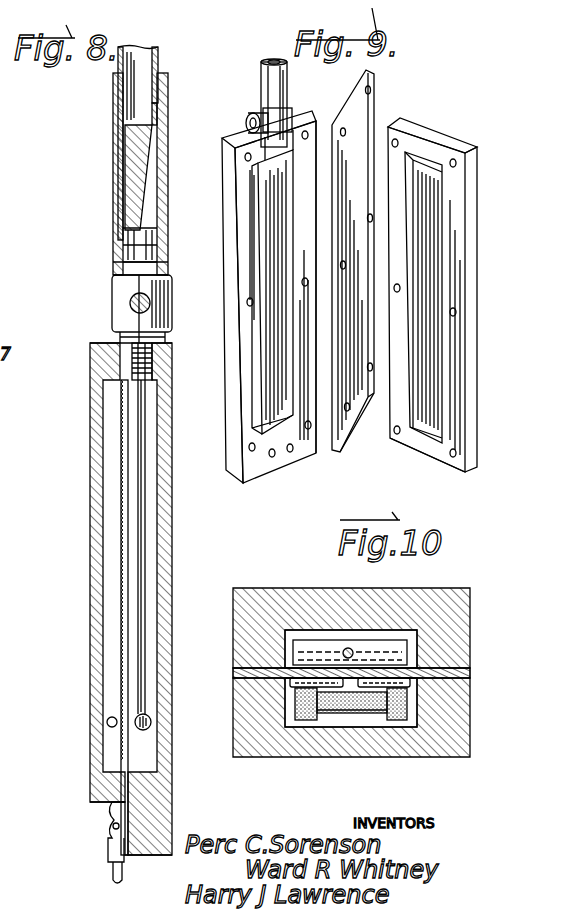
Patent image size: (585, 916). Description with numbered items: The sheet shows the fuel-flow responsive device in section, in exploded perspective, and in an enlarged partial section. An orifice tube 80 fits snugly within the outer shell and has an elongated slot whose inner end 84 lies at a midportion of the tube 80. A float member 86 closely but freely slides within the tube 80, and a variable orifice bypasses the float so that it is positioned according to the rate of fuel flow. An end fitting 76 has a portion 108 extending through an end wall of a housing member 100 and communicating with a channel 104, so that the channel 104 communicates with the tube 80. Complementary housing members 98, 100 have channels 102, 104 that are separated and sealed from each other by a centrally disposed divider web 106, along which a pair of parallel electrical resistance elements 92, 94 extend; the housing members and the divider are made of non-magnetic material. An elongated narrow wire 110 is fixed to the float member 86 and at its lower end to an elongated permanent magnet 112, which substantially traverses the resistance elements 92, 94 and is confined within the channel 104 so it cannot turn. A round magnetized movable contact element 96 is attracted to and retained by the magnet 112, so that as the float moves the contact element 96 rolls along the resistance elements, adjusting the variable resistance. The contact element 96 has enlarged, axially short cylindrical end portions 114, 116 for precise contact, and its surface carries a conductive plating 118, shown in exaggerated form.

In FIG. 8, the end fitting 76 is at (172, 303).
In FIG. 8, the orifice tube 80 is at (160, 61).
In FIG. 8, the inner end of slot 84 is at (90, 298).
In FIG. 8, the float member 86 is at (152, 139).
In FIG. 10, the electrical resistance element 92 is at (287, 703).
In FIG. 10, the electrical resistance element 94 is at (417, 668).
In FIG. 8, the movable contact element 96 is at (226, 0).
In FIG. 9, the movable contact element 96 is at (269, 103).
In FIG. 10, the movable contact element 96 is at (340, 715).
In FIG. 8, the housing member 98 is at (188, 0).
In FIG. 9, the housing member 98 is at (437, 138).
In FIG. 8, the housing member 100 is at (172, 652).
In FIG. 9, the housing member 100 is at (312, 453).
In FIG. 8, the channel 102 is at (93, 652).
In FIG. 9, the channel 102 is at (410, 432).
In FIG. 9, the channel 104 is at (272, 432).
In FIG. 10, the channel 104 is at (327, 628).
In FIG. 8, the divider web 106 is at (130, 579).
In FIG. 9, the divider web 106 is at (370, 91).
In FIG. 10, the divider web 106 is at (351, 673).
In FIG. 8, the fitting portion 108 is at (152, 366).
In FIG. 8, the wire 110 is at (145, 538).
In FIG. 10, the wire 110 is at (348, 652).
In FIG. 8, the permanent magnet 112 is at (151, 720).
In FIG. 10, the permanent magnet 112 is at (383, 647).
In FIG. 10, the cylindrical end portion 114 is at (302, 717).
In FIG. 10, the cylindrical end portion 116 is at (400, 717).
In FIG. 8, the plating 118 is at (110, 738).